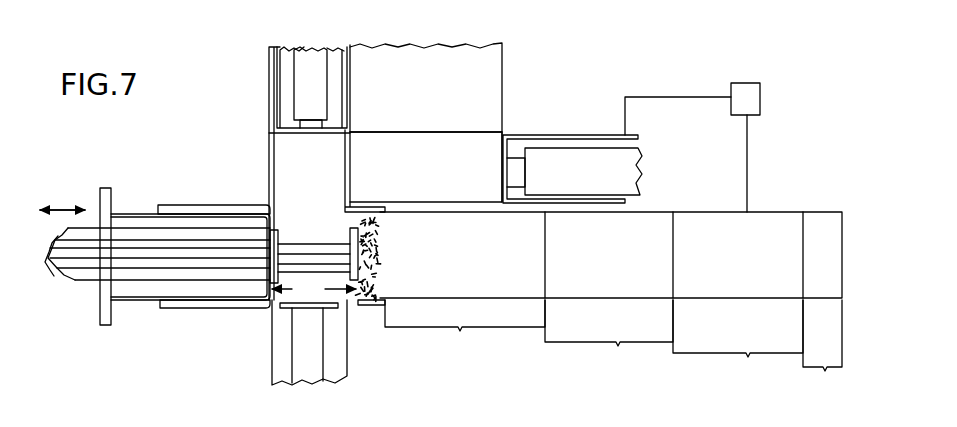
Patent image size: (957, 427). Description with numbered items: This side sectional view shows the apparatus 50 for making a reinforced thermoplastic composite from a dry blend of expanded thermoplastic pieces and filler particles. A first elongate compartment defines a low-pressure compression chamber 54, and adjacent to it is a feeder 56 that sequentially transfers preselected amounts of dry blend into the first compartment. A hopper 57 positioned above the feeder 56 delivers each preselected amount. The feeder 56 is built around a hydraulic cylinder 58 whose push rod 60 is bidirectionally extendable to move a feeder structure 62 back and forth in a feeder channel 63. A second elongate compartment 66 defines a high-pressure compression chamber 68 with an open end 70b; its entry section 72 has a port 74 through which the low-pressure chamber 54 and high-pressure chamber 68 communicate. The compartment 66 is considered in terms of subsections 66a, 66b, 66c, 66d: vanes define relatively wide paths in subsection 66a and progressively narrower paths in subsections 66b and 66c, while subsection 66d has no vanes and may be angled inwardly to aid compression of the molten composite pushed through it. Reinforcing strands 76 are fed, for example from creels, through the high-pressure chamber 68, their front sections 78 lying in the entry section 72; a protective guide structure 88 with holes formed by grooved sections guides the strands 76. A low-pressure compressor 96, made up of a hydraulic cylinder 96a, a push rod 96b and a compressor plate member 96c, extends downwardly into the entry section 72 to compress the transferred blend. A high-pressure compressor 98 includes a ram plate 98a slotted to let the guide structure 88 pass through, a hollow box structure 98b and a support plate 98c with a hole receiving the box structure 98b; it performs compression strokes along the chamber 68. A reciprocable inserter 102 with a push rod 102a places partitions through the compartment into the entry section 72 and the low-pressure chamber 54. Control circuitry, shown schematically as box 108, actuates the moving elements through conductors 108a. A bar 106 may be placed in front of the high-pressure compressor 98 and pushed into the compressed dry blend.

The apparatus 50 is at (785, 176).
The low-pressure compression chamber 54 is at (302, 170).
The feeder 56 is at (548, 130).
The hopper 57 is at (503, 66).
The hydraulic cylinder 58 is at (592, 186).
The push rod 60 is at (513, 158).
The feeder structure 62 is at (481, 167).
The feeder channel 63 is at (435, 176).
The second elongate compartment 66 is at (784, 212).
The subsection 66a is at (481, 359).
The subsection 66b is at (638, 376).
The subsection 66c is at (766, 391).
The subsection 66d is at (849, 403).
The high-pressure compression chamber 68 is at (780, 270).
The open end 70b is at (901, 229).
The entry section 72 is at (314, 290).
The port 74 is at (294, 212).
The reinforcing strands 76 is at (67, 278).
The front sections 78 is at (318, 270).
The protective guide structure 88 is at (89, 287).
The low-pressure compressor 96 is at (333, 60).
The hydraulic cylinder 96a is at (328, 25).
The push rod 96b is at (278, 122).
The compressor plate member 96c is at (335, 128).
The high-pressure compressor 98 is at (138, 212).
The ram plate 98a is at (276, 222).
The hollow box structure 98b is at (137, 301).
The support plate 98c is at (113, 324).
The reciprocable inserter 102 is at (350, 343).
The push rod 102a is at (386, 414).
The bar 106 is at (353, 228).
The control circuitry 108 is at (761, 97).
The conductors 108a is at (744, 67).